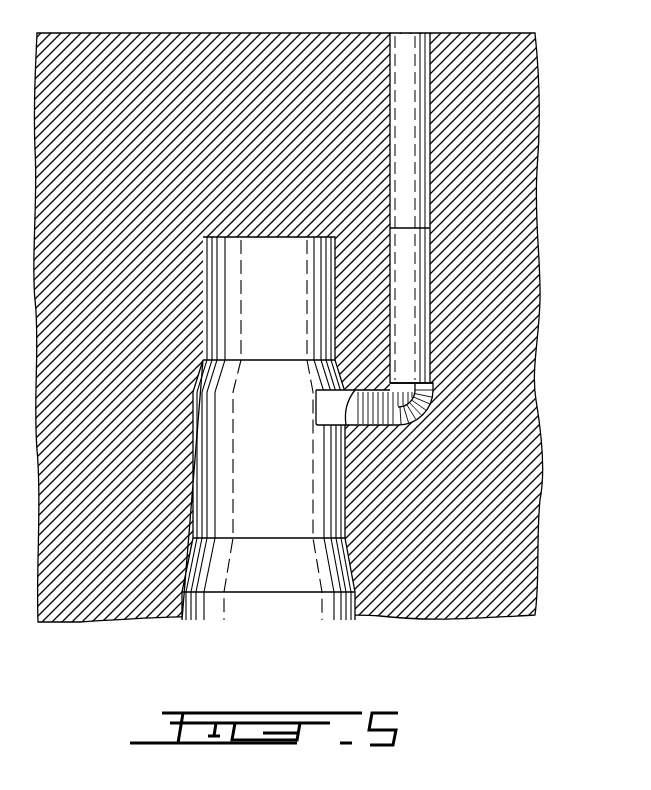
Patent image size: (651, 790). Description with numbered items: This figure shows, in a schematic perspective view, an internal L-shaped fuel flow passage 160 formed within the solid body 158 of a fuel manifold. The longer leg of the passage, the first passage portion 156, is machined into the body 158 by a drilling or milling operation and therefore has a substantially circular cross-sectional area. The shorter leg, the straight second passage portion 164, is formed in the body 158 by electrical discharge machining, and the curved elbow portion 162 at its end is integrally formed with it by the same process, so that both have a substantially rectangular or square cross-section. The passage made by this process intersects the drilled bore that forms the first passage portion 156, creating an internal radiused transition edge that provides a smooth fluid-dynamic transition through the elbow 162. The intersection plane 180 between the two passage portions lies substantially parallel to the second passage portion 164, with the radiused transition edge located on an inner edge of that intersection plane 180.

The first passage portion 156 is at (430, 196).
The body 158 is at (485, 277).
The L-shaped passage 160 is at (462, 354).
The intersection plane 180 is at (430, 373).
The elbow portion 162 is at (418, 425).
The second passage portion 164 is at (348, 430).